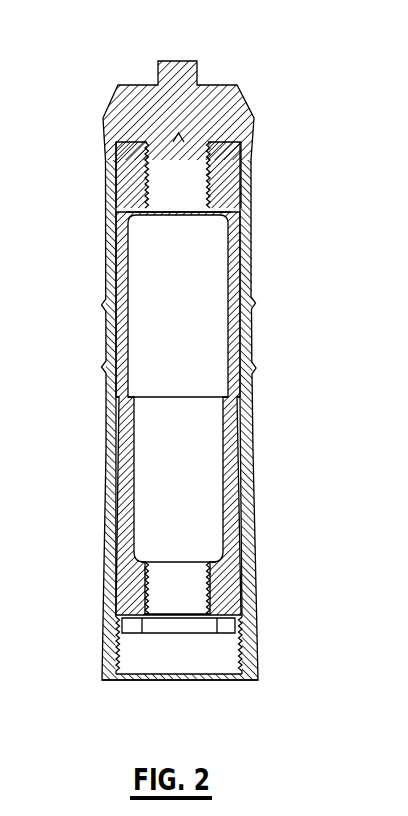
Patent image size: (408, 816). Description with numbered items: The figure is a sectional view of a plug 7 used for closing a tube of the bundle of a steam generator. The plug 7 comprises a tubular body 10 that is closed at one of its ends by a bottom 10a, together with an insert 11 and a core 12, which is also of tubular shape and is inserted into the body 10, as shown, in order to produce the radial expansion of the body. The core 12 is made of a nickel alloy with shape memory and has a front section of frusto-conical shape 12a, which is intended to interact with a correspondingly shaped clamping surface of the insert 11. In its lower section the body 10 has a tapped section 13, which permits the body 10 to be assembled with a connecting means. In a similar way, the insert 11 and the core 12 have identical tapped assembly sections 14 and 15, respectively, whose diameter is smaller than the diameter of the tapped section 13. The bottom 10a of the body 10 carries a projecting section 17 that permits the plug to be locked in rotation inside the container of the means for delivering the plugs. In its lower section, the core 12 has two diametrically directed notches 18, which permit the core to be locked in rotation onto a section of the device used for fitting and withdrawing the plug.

The plug 7 is at (257, 346).
The tubular body 10 is at (108, 150).
The bottom 10a is at (120, 103).
The insert 11 is at (117, 328).
The core 12 is at (123, 492).
The frusto-conical front section 12a is at (118, 420).
The tapped section 13 is at (112, 658).
The tapped assembly section 14 is at (212, 183).
The tapped assembly section 15 is at (215, 593).
The projecting section 17 is at (176, 72).
The notches 18 is at (223, 625).